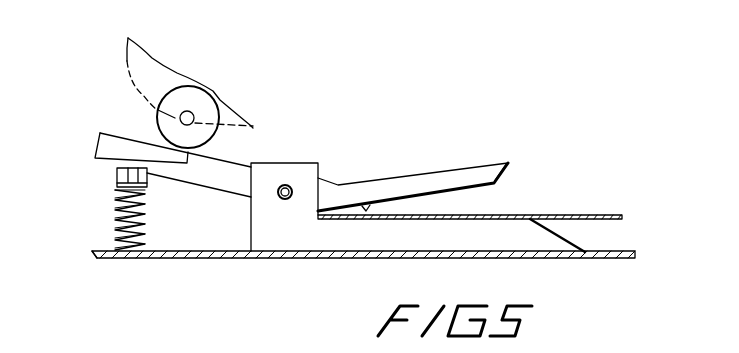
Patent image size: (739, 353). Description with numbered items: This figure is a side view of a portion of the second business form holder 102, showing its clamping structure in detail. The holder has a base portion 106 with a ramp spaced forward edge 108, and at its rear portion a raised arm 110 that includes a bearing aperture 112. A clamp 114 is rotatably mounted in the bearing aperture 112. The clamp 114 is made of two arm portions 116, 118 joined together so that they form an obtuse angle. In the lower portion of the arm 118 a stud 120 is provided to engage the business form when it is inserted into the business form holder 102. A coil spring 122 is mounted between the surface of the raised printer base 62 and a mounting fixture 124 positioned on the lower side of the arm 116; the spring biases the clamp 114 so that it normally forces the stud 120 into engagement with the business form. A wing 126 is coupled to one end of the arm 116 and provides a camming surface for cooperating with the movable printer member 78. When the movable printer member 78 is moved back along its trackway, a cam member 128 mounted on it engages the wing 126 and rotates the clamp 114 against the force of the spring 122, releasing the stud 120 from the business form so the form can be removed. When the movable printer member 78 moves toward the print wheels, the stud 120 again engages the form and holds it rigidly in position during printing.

The raised printer base 62 is at (98, 257).
The movable printer member 78 is at (150, 72).
The second business form holder 102 is at (277, 270).
The base portion 106 is at (470, 233).
The ramp spaced forward edge 108 is at (553, 239).
The raised arm 110 is at (288, 239).
The bearing aperture 112 is at (293, 188).
The clamp 114 is at (360, 176).
The arm portion 116 is at (203, 175).
The arm portion 118 is at (477, 160).
The stud 120 is at (318, 211).
The coil spring 122 is at (113, 218).
The mounting fixture 124 is at (113, 142).
The wing 126 is at (117, 175).
The cam member 128 is at (205, 111).